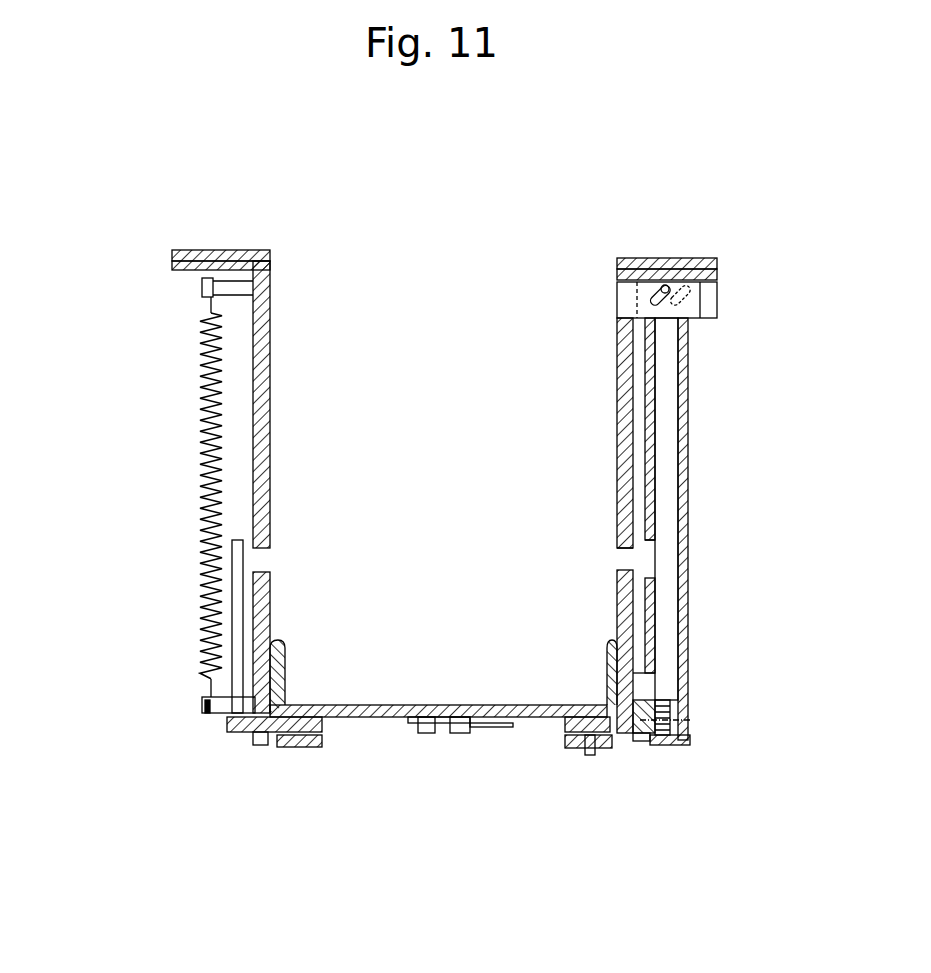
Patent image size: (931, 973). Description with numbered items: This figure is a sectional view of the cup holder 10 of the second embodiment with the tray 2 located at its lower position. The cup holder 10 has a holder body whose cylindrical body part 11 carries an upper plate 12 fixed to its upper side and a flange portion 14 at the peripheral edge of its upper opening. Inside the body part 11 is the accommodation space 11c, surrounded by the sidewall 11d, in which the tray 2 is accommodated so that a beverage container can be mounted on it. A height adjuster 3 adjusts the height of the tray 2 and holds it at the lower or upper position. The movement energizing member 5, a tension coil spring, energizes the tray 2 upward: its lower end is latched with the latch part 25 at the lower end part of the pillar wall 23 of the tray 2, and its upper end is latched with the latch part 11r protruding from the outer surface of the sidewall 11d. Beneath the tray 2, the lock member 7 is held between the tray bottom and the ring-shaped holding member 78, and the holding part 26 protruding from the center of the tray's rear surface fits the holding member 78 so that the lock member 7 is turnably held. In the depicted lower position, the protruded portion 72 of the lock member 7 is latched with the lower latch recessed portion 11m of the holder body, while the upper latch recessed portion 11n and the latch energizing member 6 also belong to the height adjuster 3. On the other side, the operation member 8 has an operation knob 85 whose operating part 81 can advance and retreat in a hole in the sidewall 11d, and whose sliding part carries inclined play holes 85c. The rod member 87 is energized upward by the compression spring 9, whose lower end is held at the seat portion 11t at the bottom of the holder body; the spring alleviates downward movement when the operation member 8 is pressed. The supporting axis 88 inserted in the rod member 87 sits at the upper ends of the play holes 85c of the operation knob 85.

The cup holder 10 is at (238, 203).
The upper plate 12 is at (172, 255).
The flange portion 14 is at (172, 265).
The accommodation space 11c is at (400, 437).
The latch part 11r is at (202, 288).
The movement energizing member 5 is at (200, 370).
The pillar wall 23 is at (240, 614).
The latch part 25 is at (203, 707).
The tray 2 is at (380, 705).
The lock member 7 is at (322, 725).
The holding member 78 is at (300, 748).
The holding part 26 is at (432, 738).
The latch energizing member 6 is at (492, 730).
The operation knob 85 is at (688, 308).
The play holes 85c is at (650, 300).
The supporting axis 88 is at (667, 285).
The operating part 81 is at (620, 300).
The sidewall 11d is at (630, 500).
The upper latch recessed portion 11n is at (627, 550).
The body part 11 is at (628, 610).
The operation member 8 is at (690, 375).
The rod member 87 is at (665, 440).
The height adjuster 3 is at (690, 655).
The lower latch recessed portion 11m is at (640, 745).
The compression spring 9 is at (672, 720).
The protruded portion 72 is at (652, 745).
The seat portion 11t is at (665, 745).